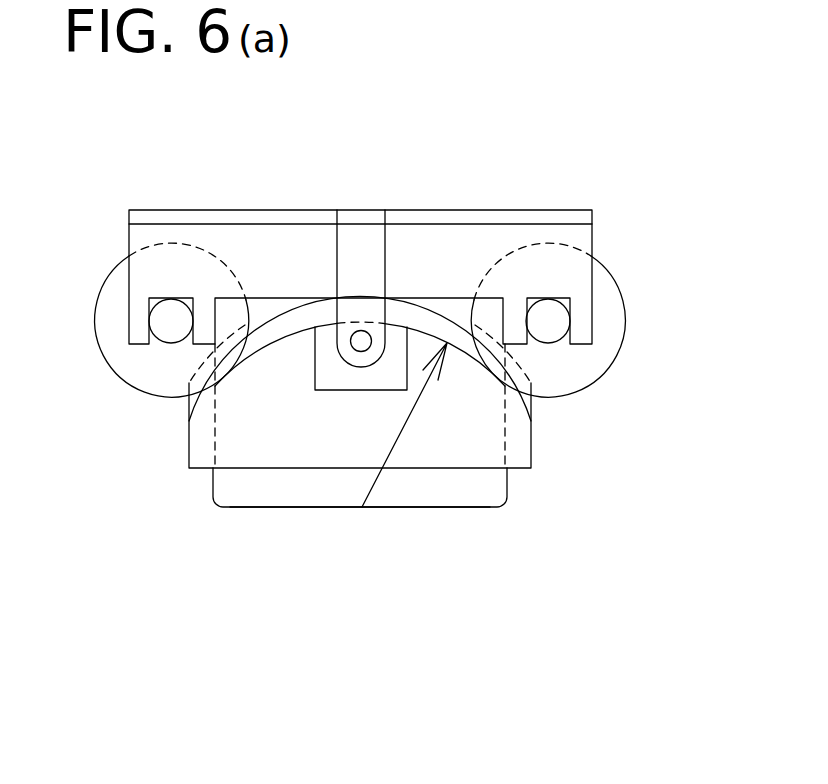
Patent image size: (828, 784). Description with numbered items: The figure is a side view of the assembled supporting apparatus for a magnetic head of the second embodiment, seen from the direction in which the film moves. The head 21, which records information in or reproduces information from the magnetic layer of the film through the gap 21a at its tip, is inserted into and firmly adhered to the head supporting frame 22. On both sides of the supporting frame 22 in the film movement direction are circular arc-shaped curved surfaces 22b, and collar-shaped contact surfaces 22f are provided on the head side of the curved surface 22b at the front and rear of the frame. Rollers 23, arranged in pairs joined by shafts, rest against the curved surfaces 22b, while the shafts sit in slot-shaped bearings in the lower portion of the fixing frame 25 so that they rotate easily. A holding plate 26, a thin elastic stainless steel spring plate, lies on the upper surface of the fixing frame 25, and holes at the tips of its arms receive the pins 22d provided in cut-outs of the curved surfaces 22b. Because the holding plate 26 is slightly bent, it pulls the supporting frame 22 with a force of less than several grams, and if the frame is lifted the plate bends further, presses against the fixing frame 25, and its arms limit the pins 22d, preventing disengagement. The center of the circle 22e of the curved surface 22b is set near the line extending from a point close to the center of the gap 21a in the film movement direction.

The head 21 is at (507, 484).
The gap 21a is at (300, 508).
The head supporting frame 22 is at (237, 469).
The circular arc-shaped curved surface 22b is at (533, 407).
The pin 22d is at (361, 330).
The center of the circle 22e is at (362, 507).
The collar-shaped contact surface 22f is at (273, 327).
The roller 23 is at (624, 305).
The fixing frame 25 is at (592, 233).
The holding plate 26 is at (478, 211).